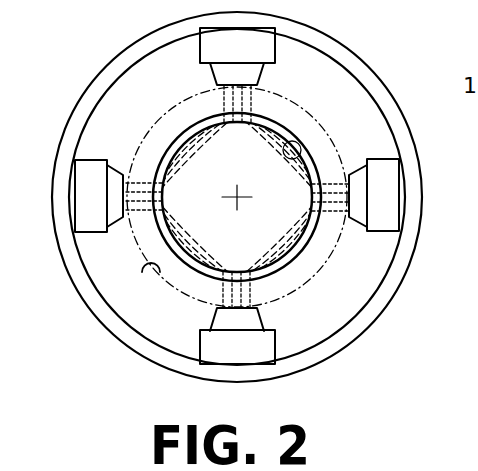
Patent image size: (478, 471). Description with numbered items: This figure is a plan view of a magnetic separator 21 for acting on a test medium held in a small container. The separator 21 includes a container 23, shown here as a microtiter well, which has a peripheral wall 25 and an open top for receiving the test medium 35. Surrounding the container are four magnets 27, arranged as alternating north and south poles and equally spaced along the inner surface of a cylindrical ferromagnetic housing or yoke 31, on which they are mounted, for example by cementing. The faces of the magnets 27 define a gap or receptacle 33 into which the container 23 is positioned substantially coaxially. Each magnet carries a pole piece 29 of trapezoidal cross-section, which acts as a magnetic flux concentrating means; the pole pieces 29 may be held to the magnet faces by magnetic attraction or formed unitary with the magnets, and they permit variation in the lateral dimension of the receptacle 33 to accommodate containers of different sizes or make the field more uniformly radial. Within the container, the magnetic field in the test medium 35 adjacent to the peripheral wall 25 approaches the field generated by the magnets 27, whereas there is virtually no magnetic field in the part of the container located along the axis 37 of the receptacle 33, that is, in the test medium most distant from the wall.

The separator 21 is at (92, 72).
The container 23 is at (278, 122).
The peripheral wall 25 is at (301, 148).
The magnets 27 is at (266, 53).
The pole pieces 29 is at (211, 76).
The ferromagnetic housing or yoke 31 is at (352, 52).
The gap or receptacle 33 is at (142, 272).
The test medium 35 is at (218, 190).
The axis 37 is at (242, 200).